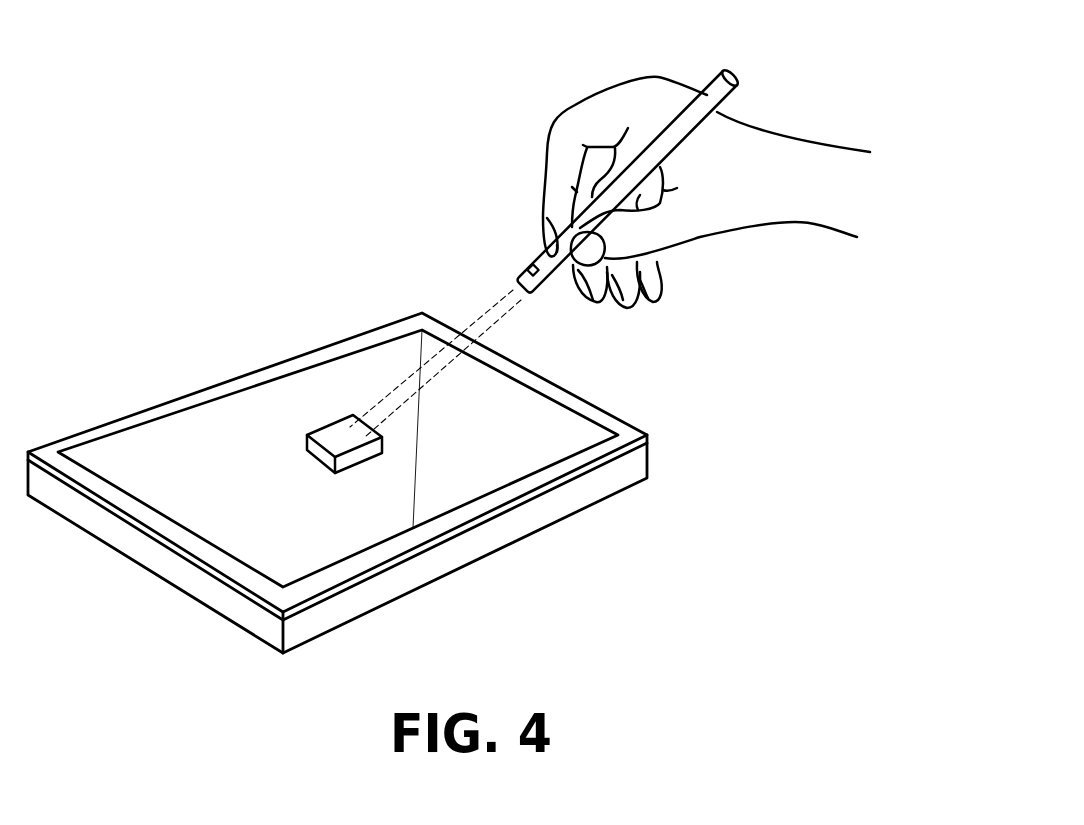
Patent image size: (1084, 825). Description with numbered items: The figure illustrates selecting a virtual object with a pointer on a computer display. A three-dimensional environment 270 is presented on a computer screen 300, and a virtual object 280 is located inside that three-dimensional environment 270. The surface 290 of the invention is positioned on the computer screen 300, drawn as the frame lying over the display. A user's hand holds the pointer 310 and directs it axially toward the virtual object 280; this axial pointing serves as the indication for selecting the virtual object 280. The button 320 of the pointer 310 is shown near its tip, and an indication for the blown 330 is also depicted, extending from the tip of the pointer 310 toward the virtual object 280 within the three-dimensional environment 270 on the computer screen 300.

The 3D environment 270 is at (190, 425).
The virtual object 280 is at (328, 420).
The surface 290 is at (562, 483).
The computer screen 300 is at (417, 577).
The pointer 310 is at (720, 93).
The button 320 is at (528, 262).
The blown 330 is at (500, 318).